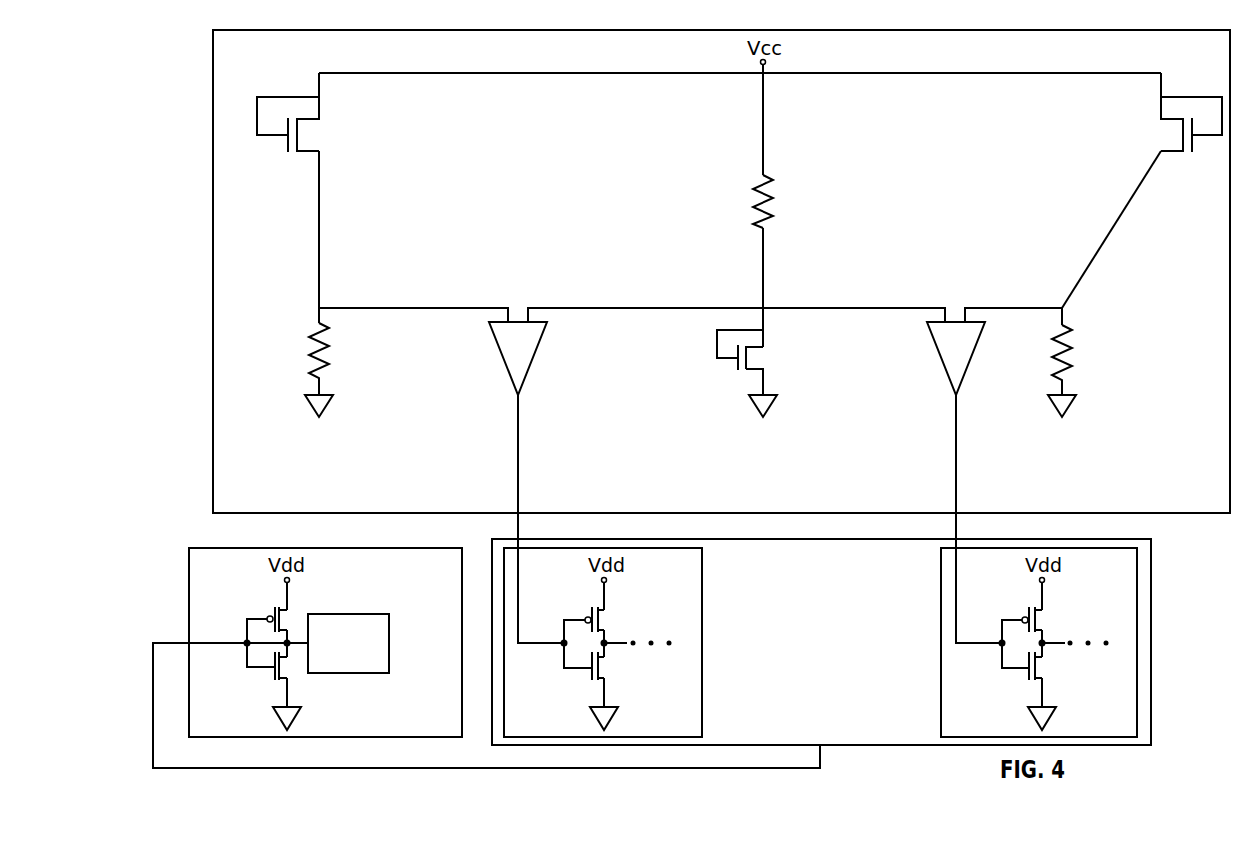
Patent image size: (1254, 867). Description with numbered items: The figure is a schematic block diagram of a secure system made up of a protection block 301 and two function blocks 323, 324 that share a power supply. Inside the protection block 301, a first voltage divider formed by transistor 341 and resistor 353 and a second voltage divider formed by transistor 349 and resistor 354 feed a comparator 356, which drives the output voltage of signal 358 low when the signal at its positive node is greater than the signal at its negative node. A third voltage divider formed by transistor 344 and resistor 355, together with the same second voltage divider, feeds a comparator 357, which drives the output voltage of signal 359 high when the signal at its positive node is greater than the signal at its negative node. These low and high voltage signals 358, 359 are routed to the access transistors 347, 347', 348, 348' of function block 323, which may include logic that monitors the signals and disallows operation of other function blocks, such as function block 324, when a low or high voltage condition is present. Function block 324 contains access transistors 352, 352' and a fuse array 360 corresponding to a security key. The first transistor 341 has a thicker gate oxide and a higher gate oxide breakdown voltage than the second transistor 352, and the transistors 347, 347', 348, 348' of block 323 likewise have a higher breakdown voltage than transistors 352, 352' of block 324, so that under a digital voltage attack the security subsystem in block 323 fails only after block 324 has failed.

The protection block 301 is at (1196, 514).
The function block 323 is at (1152, 590).
The function block 324 is at (225, 547).
The first transistor 341 is at (324, 135).
The transistor 344 is at (1148, 134).
The access transistor 347 is at (622, 671).
The access transistor 347' is at (626, 616).
The access transistor 348 is at (1060, 671).
The access transistor 348' is at (1063, 616).
The transistor 349 is at (758, 358).
The second transistor 352 is at (243, 674).
The access transistor 352' is at (240, 614).
The resistor 353 is at (304, 353).
The resistor 354 is at (748, 202).
The resistor 355 is at (1080, 353).
The comparator 356 is at (504, 360).
The comparator 357 is at (970, 360).
The signal 358 is at (520, 436).
The signal 359 is at (958, 436).
The fuse array 360 is at (352, 613).